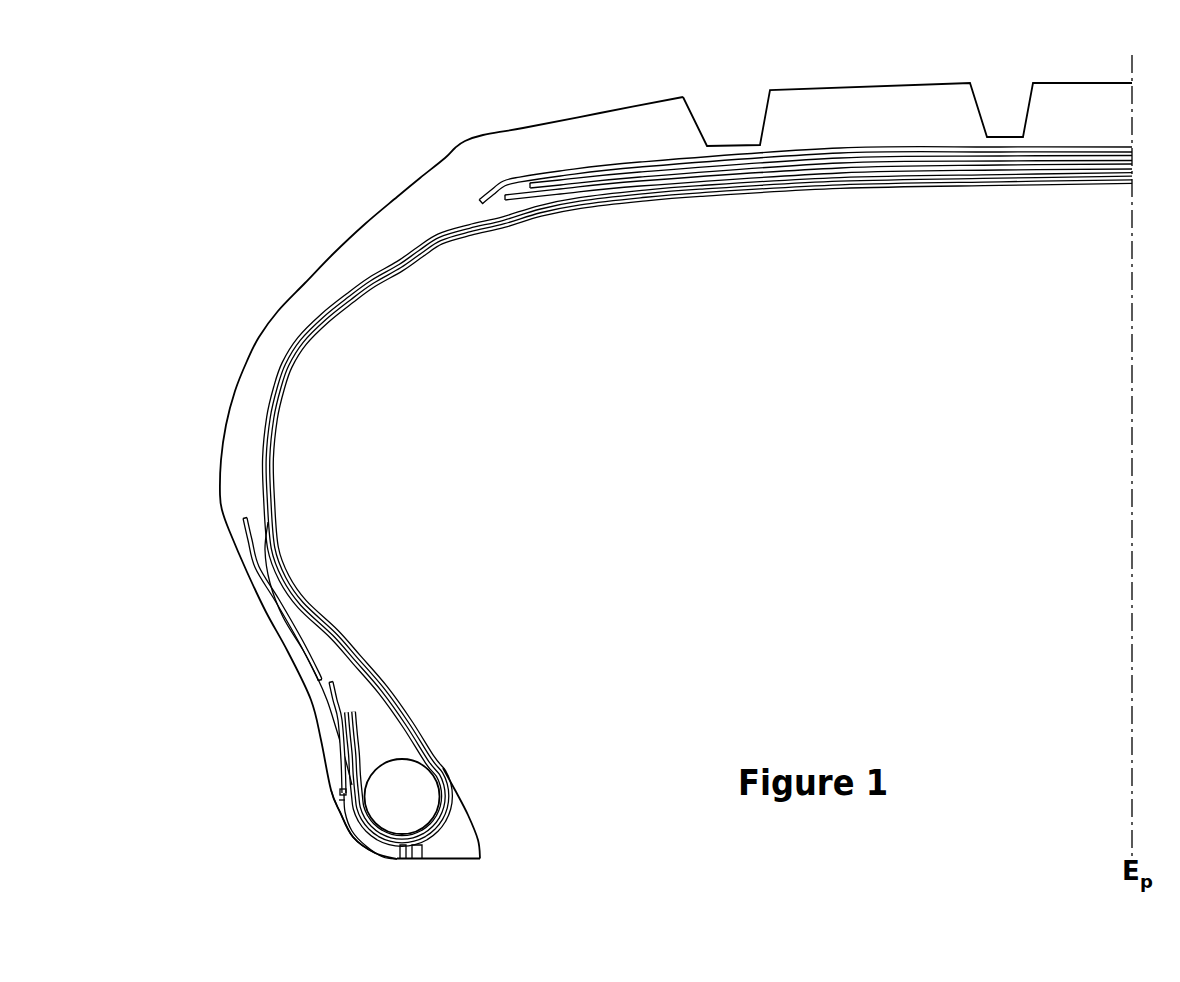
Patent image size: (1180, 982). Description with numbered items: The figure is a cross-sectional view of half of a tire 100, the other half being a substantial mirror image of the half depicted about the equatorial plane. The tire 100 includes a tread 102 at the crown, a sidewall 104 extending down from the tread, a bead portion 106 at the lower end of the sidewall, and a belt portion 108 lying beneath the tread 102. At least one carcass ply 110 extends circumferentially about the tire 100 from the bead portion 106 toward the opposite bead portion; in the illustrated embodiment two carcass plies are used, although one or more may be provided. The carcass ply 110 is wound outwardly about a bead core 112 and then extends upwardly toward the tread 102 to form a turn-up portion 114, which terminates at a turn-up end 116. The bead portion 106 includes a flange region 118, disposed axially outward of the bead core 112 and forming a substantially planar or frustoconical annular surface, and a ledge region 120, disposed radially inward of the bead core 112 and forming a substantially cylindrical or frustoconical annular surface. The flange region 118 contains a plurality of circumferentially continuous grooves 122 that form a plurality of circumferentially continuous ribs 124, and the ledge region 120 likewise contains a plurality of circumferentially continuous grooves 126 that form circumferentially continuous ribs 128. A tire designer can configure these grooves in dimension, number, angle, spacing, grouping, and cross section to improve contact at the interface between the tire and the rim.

The tire 100 is at (232, 151).
The tread 102 is at (900, 115).
The sidewall 104 is at (246, 321).
The bead portion 106 is at (300, 745).
The belt portion 108 is at (634, 174).
The carcass ply 110 is at (338, 306).
The bead core 112 is at (428, 793).
The turn-up portion 114 is at (318, 663).
The turn-up end 116 is at (240, 512).
The flange region 118 is at (340, 814).
The ledge region 120 is at (458, 861).
The circumferentially continuous grooves 122 is at (340, 792).
The circumferentially continuous ribs 124 is at (338, 800).
The circumferentially continuous grooves 126 is at (399, 861).
The circumferentially continuous ribs 128 is at (416, 862).